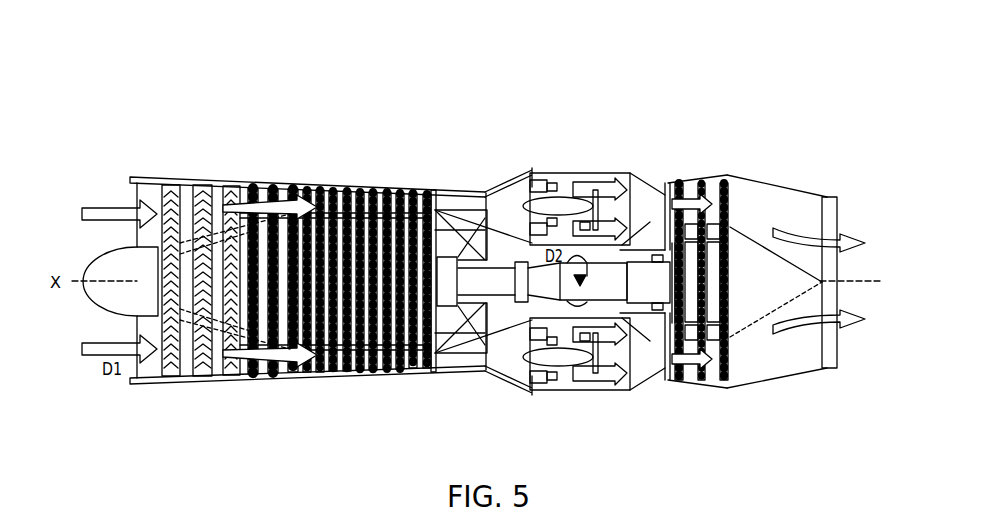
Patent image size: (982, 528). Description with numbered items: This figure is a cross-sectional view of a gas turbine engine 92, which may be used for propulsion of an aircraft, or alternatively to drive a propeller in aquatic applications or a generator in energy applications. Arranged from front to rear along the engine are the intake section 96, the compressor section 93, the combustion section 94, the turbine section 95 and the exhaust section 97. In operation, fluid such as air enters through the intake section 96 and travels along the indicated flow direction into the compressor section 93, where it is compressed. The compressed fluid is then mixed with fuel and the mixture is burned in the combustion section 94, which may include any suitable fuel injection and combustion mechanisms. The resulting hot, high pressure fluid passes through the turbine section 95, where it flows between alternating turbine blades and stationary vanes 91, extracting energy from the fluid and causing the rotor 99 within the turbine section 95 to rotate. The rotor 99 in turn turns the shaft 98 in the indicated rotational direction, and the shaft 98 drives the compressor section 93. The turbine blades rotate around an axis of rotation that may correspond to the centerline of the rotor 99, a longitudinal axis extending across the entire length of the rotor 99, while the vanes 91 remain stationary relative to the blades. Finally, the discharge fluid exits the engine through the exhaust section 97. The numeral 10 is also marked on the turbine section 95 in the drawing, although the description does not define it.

The gas turbine engine 92 is at (310, 78).
The compressor section 93 is at (223, 173).
The combustion section 94 is at (583, 163).
The turbine section 95 is at (705, 170).
The intake section 96 is at (113, 193).
The exhaust section 97 is at (863, 225).
The shaft 98 is at (607, 278).
The rotor 99 is at (692, 270).
The vanes 91 is at (713, 362).
The turbine airfoil component 10 is at (727, 212).